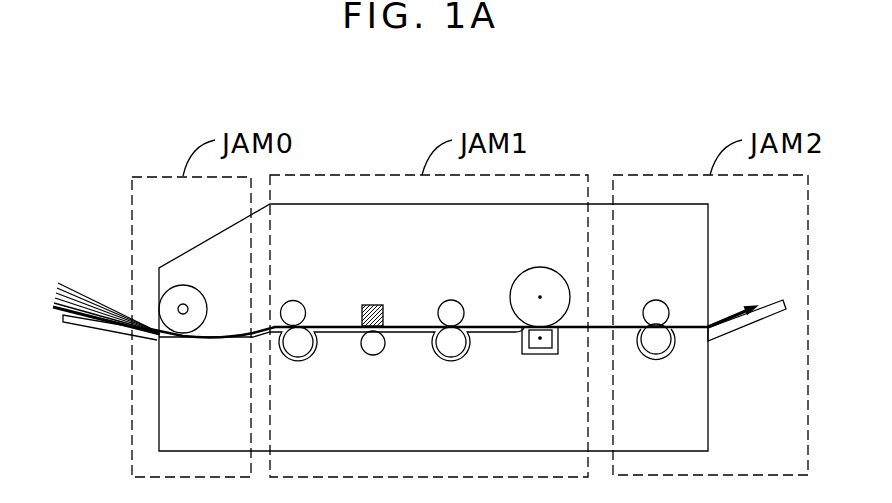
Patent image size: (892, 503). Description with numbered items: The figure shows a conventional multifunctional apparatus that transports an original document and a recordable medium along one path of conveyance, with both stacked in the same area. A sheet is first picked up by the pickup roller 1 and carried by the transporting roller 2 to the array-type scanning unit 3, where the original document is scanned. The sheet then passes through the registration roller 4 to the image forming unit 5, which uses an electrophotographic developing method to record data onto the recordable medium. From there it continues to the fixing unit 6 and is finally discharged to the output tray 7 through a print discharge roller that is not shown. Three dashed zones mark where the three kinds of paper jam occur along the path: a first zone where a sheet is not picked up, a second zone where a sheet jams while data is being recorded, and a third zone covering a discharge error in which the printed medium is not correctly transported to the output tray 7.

The pickup roller 1 is at (183, 285).
The transporting roller 2 is at (298, 355).
The scanning unit 3 is at (372, 305).
The registration roller 4 is at (457, 347).
The image forming unit 5 is at (545, 350).
The fixing unit 6 is at (658, 347).
The output tray 7 is at (750, 319).